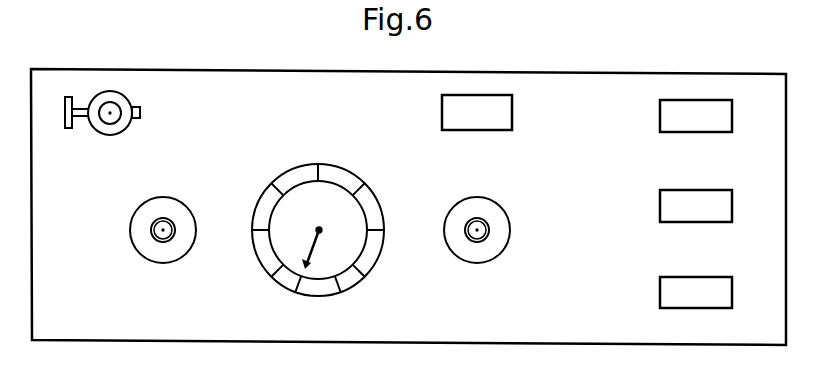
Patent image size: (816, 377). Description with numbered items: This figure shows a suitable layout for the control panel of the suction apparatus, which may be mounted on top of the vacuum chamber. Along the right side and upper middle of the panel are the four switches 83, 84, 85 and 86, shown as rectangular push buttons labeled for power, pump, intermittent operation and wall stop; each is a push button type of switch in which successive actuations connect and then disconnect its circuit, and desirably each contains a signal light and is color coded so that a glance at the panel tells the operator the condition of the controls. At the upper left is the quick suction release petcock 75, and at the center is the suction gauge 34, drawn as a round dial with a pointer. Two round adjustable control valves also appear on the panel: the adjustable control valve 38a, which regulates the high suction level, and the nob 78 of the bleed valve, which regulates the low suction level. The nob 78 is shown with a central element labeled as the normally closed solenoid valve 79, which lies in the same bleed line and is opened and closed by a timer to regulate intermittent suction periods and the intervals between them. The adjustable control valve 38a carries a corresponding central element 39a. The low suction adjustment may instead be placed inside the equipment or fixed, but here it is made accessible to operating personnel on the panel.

The quick suction release petcock 75 is at (112, 100).
The nob 78 is at (172, 253).
The normally closed solenoid valve 79 is at (166, 217).
The suction gauge 34 is at (358, 283).
The adjustable control valve 38a is at (453, 210).
The knob shaft indicator 39a is at (487, 222).
The switch 85 is at (506, 104).
The switch 83 is at (658, 107).
The switch 84 is at (659, 193).
The switch 86 is at (660, 287).